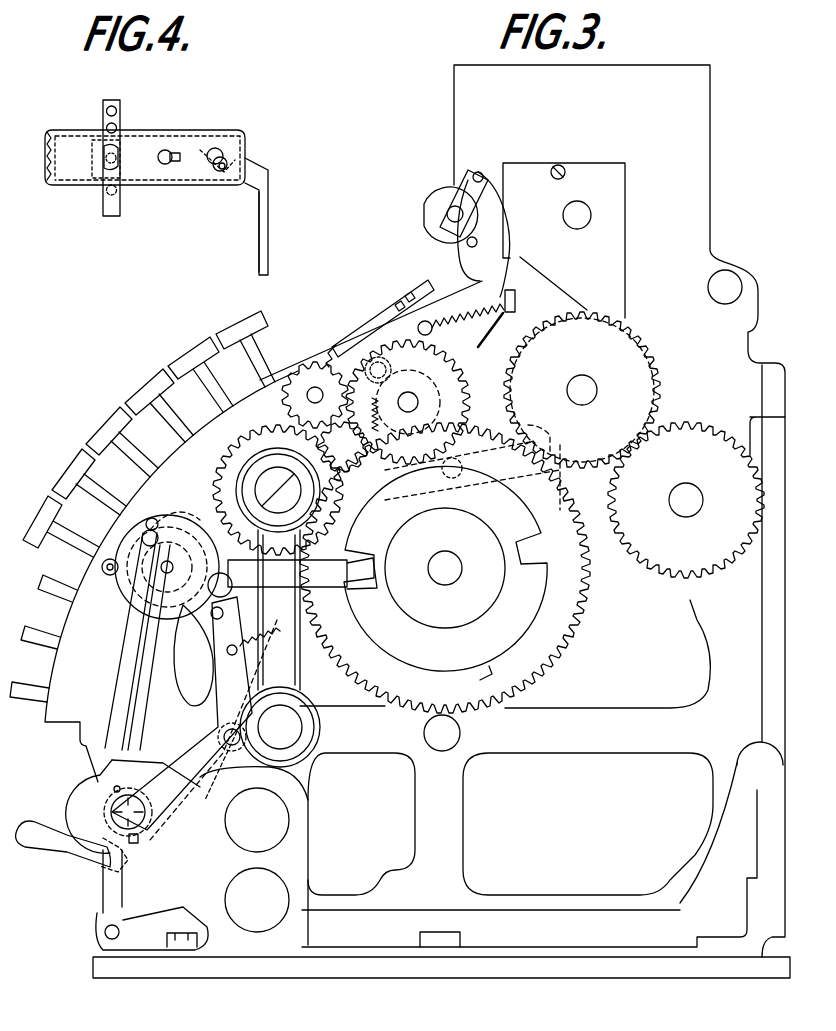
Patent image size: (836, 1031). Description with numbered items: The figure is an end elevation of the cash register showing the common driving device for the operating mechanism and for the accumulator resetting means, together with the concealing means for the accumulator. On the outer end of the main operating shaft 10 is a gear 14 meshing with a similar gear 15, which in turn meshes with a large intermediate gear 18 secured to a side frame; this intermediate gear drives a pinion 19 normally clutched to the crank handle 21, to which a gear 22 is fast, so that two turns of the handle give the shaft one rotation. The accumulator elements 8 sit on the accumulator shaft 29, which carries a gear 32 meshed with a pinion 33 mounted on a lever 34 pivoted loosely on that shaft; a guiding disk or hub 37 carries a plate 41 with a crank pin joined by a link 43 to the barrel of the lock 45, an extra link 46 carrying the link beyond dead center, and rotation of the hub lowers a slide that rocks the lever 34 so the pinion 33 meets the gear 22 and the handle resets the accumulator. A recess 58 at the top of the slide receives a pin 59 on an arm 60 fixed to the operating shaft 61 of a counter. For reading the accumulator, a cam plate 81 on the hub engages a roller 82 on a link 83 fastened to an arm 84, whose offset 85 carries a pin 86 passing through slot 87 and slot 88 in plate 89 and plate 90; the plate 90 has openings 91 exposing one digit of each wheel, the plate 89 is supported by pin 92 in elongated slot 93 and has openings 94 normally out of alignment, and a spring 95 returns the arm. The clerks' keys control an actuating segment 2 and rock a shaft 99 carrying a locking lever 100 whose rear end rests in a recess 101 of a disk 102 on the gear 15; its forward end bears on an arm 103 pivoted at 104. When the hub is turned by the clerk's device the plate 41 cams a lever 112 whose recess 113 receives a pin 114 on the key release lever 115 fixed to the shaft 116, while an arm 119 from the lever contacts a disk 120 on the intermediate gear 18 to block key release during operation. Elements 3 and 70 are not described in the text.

In FIG. 4, the actuating segment 2 is at (111, 204).
In FIG. 3, the stud hole 3 is at (424, 733).
In FIG. 4, the accumulator element 8 is at (120, 105).
In FIG. 3, the main operating shaft 10 is at (703, 500).
In FIG. 3, the gear 14 is at (700, 425).
In FIG. 3, the gear 15 is at (630, 340).
In FIG. 3, the intermediate gear 18 is at (570, 650).
In FIG. 3, the pinion 19 is at (605, 752).
In FIG. 3, the crank handle 21 is at (312, 705).
In FIG. 3, the gear 22 is at (322, 490).
In FIG. 3, the accumulator shaft 29 is at (412, 412).
In FIG. 3, the gear 32 is at (450, 365).
In FIG. 3, the pinion 33 is at (330, 358).
In FIG. 3, the lever 34 is at (520, 268).
In FIG. 3, the guiding disk or hub 37 is at (193, 655).
In FIG. 3, the plate 41 is at (163, 625).
In FIG. 3, the link 43 is at (118, 683).
In FIG. 3, the lock 45 is at (98, 793).
In FIG. 3, the extra link 46 is at (150, 695).
In FIG. 3, the recess 58 is at (490, 172).
In FIG. 3, the pin 59 is at (478, 172).
In FIG. 3, the arm 60 is at (455, 185).
In FIG. 3, the operating shaft 61 is at (445, 208).
In FIG. 3, the gear hub 70 is at (580, 382).
In FIG. 3, the cam plate 81 is at (172, 515).
In FIG. 3, the roller 82 is at (165, 520).
In FIG. 3, the link 83 is at (343, 453).
In FIG. 4, the arm 84 is at (268, 210).
In FIG. 3, the arm 84 is at (390, 370).
In FIG. 4, the offset 85 is at (256, 170).
In FIG. 4, the pin 86 is at (230, 160).
In FIG. 4, the slot 87 is at (208, 147).
In FIG. 4, the slot 88 is at (224, 157).
In FIG. 4, the plate 89 is at (48, 133).
In FIG. 3, the plate 89 is at (348, 350).
In FIG. 4, the plate 90 is at (72, 180).
In FIG. 3, the plate 90 is at (375, 325).
In FIG. 4, the opening 91 is at (118, 165).
In FIG. 4, the pin 92 is at (167, 148).
In FIG. 4, the elongated slot 93 is at (178, 165).
In FIG. 4, the opening 94 is at (92, 150).
In FIG. 3, the spring 95 is at (378, 422).
In FIG. 3, the shaft 99 is at (464, 466).
In FIG. 3, the locking lever 100 is at (528, 468).
In FIG. 3, the recess 101 is at (555, 425).
In FIG. 3, the disk 102 is at (570, 358).
In FIG. 3, the arm 103 is at (410, 600).
In FIG. 3, the pivot 104 is at (225, 760).
In FIG. 3, the lever 112 is at (200, 717).
In FIG. 3, the recess 113 is at (115, 845).
In FIG. 3, the pin 114 is at (108, 823).
In FIG. 3, the key release lever 115 is at (60, 845).
In FIG. 3, the shaft 116 is at (140, 858).
In FIG. 3, the arm 119 is at (316, 575).
In FIG. 3, the disk 120 is at (533, 598).